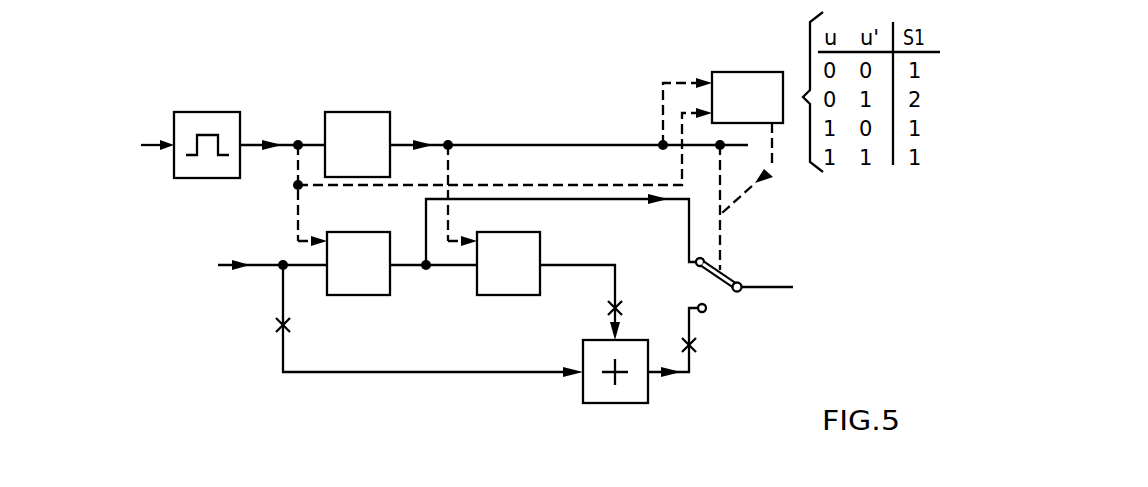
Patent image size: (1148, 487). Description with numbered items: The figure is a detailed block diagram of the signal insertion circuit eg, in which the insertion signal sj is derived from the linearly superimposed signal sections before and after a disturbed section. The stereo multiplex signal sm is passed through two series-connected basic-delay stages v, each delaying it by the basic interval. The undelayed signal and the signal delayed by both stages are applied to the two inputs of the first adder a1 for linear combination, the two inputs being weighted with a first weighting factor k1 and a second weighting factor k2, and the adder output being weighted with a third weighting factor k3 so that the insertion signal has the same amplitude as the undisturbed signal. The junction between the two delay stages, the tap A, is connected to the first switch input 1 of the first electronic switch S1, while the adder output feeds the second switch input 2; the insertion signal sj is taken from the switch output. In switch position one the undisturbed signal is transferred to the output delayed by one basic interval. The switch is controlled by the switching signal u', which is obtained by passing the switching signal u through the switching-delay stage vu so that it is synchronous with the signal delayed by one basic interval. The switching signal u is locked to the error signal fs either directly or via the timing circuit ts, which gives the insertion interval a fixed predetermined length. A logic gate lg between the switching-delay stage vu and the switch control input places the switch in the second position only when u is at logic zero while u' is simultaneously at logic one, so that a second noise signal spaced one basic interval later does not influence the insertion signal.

The error signal fs is at (146, 146).
The timing circuit ts is at (242, 117).
The switching signal u is at (476, 177).
The switching-delay stage vu is at (391, 117).
The switching signal u' is at (569, 174).
The logic gate lg is at (748, 72).
The stereo multiplex signal sm is at (253, 266).
The first weighting factor k1 is at (415, 321).
The basic-delay stage v is at (351, 296).
The tap A is at (543, 248).
The second weighting factor k2 is at (581, 302).
The first adder a1 is at (612, 404).
The third weighting factor k3 is at (689, 342).
The first switch input 1 is at (689, 263).
The second switch input 2 is at (689, 308).
The first electronic switch S1 is at (728, 273).
The insertion signal sj is at (783, 285).
The signal insertion circuit eg is at (428, 418).